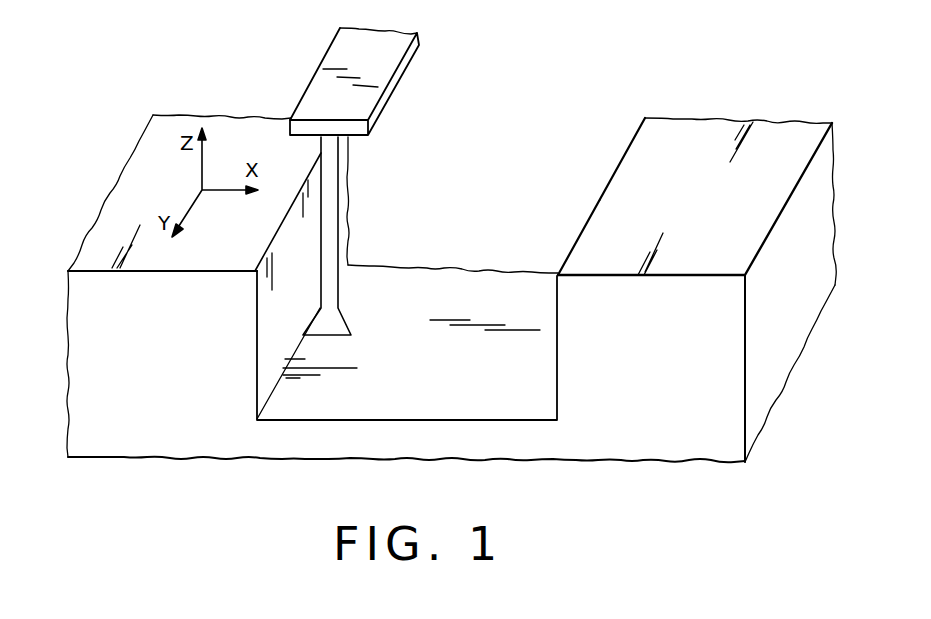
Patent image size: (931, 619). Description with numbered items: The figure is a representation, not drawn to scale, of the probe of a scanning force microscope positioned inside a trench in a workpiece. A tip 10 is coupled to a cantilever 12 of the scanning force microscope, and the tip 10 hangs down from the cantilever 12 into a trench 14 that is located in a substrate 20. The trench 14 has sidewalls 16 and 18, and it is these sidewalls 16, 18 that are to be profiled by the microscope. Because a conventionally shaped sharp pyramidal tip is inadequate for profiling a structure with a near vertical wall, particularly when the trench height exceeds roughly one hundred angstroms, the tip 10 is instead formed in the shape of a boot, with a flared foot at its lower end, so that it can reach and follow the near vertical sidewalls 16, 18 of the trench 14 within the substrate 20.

The tip 10 is at (335, 233).
The cantilever 12 is at (390, 66).
The trench 14 is at (542, 233).
The sidewall 16 is at (257, 377).
The sidewall 18 is at (557, 375).
The substrate 20 is at (690, 275).